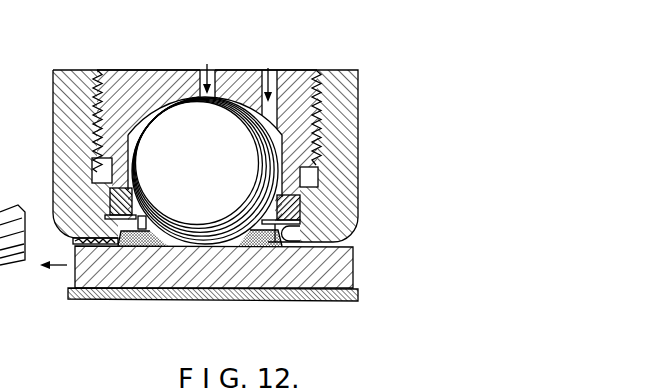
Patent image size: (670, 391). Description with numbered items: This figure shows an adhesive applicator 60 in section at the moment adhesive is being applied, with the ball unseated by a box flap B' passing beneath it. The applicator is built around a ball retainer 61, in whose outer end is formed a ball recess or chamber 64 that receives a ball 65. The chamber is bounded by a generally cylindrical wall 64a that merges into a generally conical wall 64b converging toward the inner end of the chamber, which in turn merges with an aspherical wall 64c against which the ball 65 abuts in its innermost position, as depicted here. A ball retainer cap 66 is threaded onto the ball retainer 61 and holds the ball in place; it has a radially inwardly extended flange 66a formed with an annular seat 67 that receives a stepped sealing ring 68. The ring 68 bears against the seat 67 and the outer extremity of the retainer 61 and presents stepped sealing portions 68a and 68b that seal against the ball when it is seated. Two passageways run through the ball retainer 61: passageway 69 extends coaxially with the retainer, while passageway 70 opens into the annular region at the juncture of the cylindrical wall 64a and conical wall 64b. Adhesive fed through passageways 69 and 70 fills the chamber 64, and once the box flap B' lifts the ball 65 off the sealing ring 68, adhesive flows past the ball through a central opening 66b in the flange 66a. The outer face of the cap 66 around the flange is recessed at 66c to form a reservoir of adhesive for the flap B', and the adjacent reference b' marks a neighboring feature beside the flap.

The adhesive applicator 60 is at (294, 70).
The ball retainer 61 is at (142, 82).
The ball recess or chamber 64 is at (281, 142).
The cylindrical wall 64a is at (130, 141).
The conical wall 64b is at (152, 116).
The aspherical wall 64c is at (190, 99).
The ball 65 is at (237, 147).
The ball retainer cap 66 is at (334, 197).
The radially inwardly extended flange 66a is at (299, 226).
The central opening 66b is at (147, 229).
The recess 66c is at (122, 246).
The annular seat 67 is at (301, 209).
The stepped sealing ring 68 is at (300, 226).
The stepped sealing portion 68a is at (133, 200).
The stepped sealing portion 68b is at (143, 217).
The passageway 69 is at (207, 64).
The passageway 70 is at (278, 50).
The box flap B' is at (335, 195).
The adjacent member b' is at (12, 259).